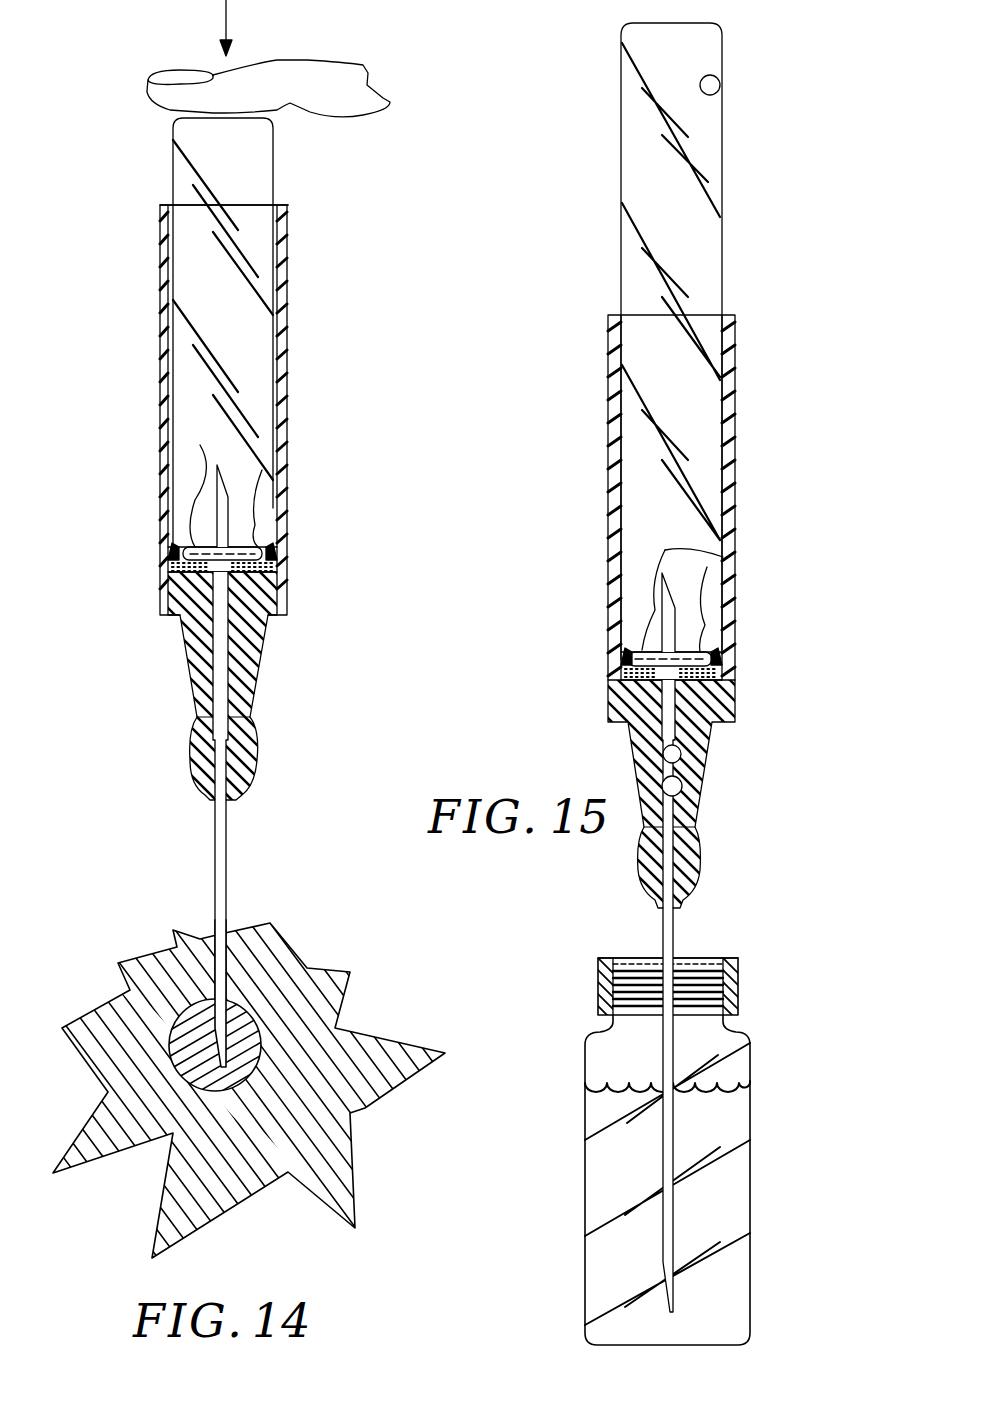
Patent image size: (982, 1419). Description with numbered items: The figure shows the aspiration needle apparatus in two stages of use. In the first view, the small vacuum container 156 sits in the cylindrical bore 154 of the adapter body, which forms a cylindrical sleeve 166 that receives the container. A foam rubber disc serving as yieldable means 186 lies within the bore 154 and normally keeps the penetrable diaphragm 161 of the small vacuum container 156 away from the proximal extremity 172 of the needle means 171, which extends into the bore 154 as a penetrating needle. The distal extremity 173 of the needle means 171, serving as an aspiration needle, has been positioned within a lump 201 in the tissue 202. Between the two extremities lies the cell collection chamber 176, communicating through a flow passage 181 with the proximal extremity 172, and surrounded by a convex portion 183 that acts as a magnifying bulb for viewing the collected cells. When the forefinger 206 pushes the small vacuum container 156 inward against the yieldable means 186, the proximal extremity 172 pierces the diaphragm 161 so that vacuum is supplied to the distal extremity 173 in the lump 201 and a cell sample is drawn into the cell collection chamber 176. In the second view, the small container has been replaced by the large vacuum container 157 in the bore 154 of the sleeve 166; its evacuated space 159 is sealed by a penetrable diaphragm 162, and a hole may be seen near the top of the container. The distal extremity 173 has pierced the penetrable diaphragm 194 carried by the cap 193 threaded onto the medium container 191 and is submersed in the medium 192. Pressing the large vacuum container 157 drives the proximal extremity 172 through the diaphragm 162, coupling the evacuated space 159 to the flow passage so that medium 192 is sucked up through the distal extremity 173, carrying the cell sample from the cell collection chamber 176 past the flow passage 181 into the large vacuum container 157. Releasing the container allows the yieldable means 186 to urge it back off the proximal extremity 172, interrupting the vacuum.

In FIG. 14, the cylindrical bore 154 is at (170, 330).
In FIG. 14, the small vacuum container 156 is at (180, 155).
In FIG. 15, the large vacuum container 157 is at (640, 132).
In FIG. 15, the evacuated space 159 is at (718, 95).
In FIG. 14, the penetrable diaphragm 161 is at (200, 445).
In FIG. 15, the penetrable diaphragm 162 is at (723, 557).
In FIG. 14, the cylindrical sleeve 166 is at (287, 337).
In FIG. 15, the cylindrical sleeve 166 is at (671, 497).
In FIG. 14, the needle means 171 is at (240, 614).
In FIG. 15, the needle means 171 is at (650, 938).
In FIG. 14, the proximal extremity 172 is at (230, 510).
In FIG. 15, the proximal extremity 172 is at (676, 613).
In FIG. 14, the distal extremity 173 is at (215, 916).
In FIG. 15, the distal extremity 173 is at (673, 1300).
In FIG. 15, the cell collection chamber 176 is at (697, 800).
In FIG. 15, the flow passage 181 is at (683, 758).
In FIG. 15, the convex portion 183 is at (702, 851).
In FIG. 14, the foam rubber disc 186 is at (166, 587).
In FIG. 15, the foam rubber disc 186 is at (619, 689).
In FIG. 15, the medium container 191 is at (750, 1185).
In FIG. 15, the medium 192 is at (740, 1080).
In FIG. 15, the cap 193 is at (738, 985).
In FIG. 15, the penetrable diaphragm 194 is at (625, 958).
In FIG. 14, the lump 201 is at (262, 1030).
In FIG. 14, the tissue 202 is at (350, 1112).
In FIG. 14, the forefinger 206 is at (312, 72).